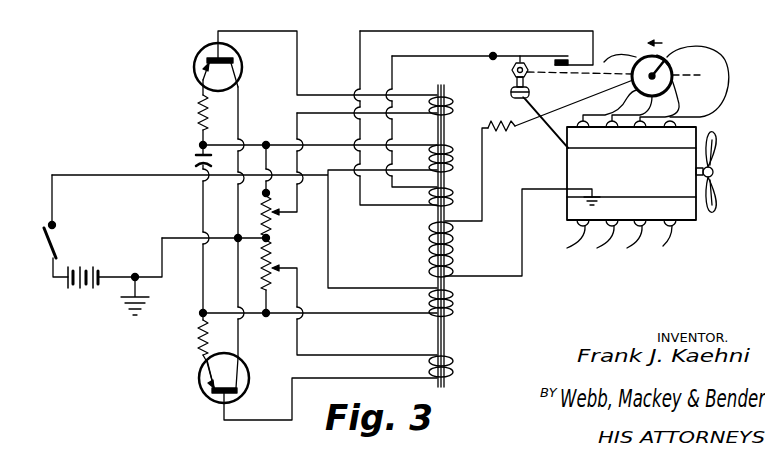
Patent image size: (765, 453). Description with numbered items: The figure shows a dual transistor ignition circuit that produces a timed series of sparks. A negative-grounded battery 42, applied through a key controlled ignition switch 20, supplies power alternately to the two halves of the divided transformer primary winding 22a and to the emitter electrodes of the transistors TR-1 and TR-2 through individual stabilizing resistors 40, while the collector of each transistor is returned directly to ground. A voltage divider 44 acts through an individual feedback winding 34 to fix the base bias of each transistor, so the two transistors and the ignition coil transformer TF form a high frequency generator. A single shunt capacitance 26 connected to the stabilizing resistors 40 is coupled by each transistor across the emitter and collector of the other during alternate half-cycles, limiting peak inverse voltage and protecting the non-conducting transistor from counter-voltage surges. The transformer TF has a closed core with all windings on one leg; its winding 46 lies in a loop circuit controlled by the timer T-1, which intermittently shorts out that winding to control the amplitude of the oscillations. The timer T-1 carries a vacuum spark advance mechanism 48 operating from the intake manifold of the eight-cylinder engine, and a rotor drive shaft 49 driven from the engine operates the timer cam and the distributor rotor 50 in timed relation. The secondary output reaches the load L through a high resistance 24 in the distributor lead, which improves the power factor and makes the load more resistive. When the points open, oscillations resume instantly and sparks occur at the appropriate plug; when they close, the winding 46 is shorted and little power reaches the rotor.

The transistor TR-1 is at (195, 58).
The transistor TR-2 is at (199, 376).
The stabilizing resistor 40 is at (198, 109).
The shunt capacitance 26 is at (196, 158).
The ignition switch 20 is at (45, 243).
The battery 42 is at (82, 297).
The voltage divider 44 is at (275, 247).
The feedback winding 34 is at (429, 95).
The ignition coil transformer TF is at (446, 130).
The divided transformer primary winding 22a is at (455, 158).
The winding 46 is at (452, 198).
The high resistance 24 is at (500, 133).
The timer T-1 is at (511, 70).
The vacuum spark advance mechanism 48 is at (511, 94).
The rotor drive shaft 49 is at (596, 72).
The distributor rotor 50 is at (666, 56).
The load L is at (727, 68).